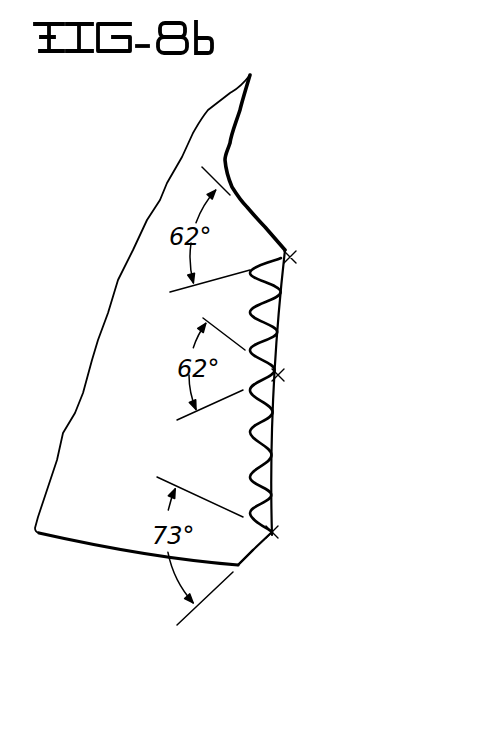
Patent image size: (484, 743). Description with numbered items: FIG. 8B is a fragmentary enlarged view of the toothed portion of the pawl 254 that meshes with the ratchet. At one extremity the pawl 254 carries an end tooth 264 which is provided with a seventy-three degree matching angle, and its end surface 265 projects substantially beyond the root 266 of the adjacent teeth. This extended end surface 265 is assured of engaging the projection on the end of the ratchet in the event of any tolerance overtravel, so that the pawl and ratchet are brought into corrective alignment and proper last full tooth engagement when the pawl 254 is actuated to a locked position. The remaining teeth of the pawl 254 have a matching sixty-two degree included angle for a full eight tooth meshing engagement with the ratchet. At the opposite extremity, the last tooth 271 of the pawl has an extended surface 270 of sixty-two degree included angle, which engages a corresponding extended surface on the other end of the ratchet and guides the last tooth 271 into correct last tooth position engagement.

The pawl 254 is at (300, 420).
The extended surface 270 is at (257, 224).
The last tooth 271 is at (277, 260).
The root 266 is at (247, 517).
The end tooth 264 is at (270, 540).
The end surface 265 is at (253, 552).